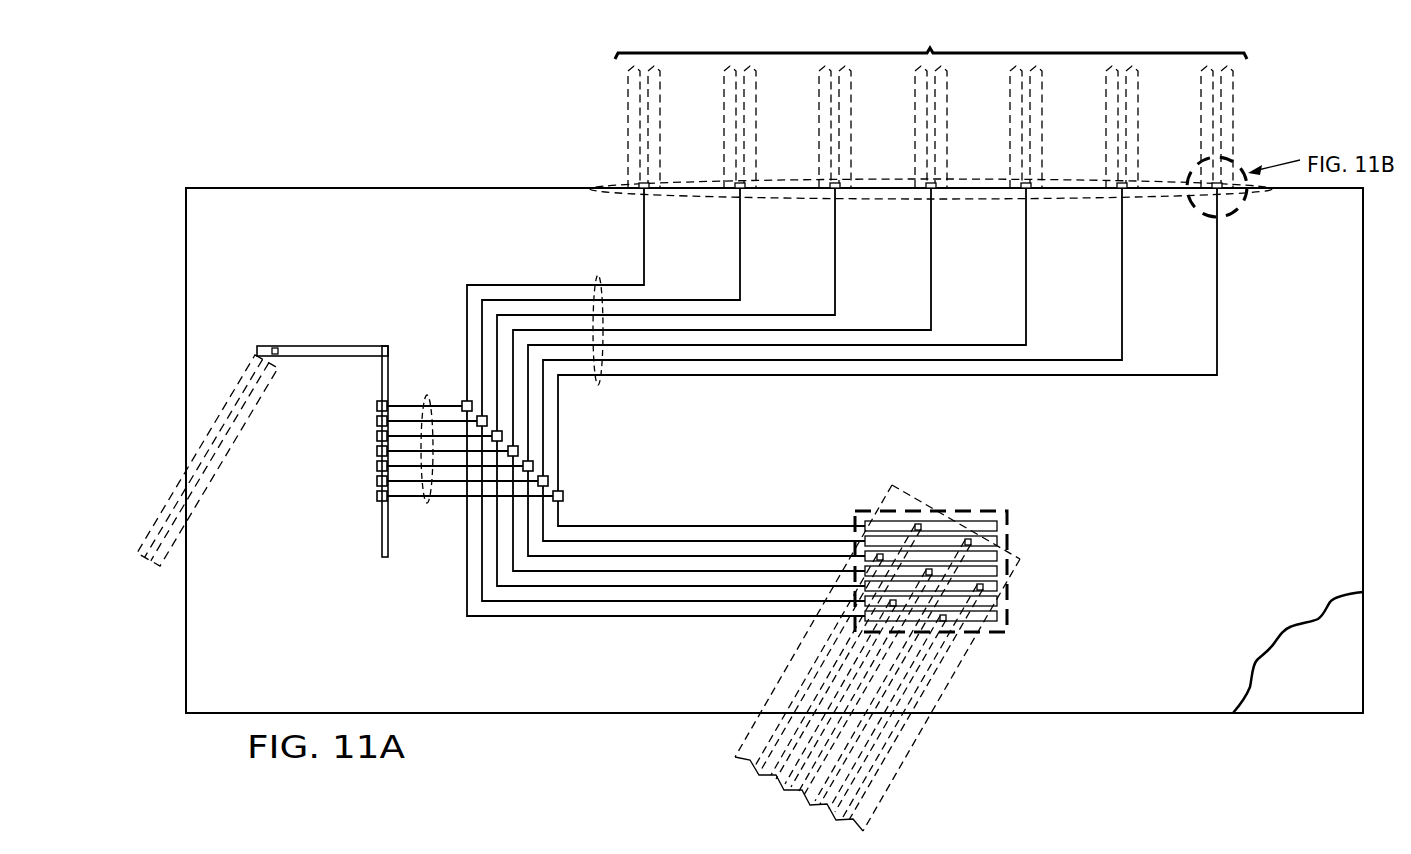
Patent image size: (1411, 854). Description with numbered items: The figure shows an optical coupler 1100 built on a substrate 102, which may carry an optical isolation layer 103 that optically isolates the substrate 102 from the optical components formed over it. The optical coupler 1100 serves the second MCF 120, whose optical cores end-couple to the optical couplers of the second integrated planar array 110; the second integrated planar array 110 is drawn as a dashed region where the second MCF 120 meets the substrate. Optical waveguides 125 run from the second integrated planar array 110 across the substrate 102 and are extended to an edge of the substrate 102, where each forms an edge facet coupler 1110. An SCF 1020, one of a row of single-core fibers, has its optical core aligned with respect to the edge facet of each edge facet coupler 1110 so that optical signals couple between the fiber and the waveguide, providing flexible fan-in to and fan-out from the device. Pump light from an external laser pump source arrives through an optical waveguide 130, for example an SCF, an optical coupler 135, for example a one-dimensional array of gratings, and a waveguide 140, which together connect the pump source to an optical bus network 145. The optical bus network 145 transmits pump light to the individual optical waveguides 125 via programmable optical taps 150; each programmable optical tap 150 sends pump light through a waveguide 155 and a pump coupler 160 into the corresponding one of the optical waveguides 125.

The optical coupler 1100 is at (464, 129).
The SCF 1020 is at (931, 103).
The edge facet coupler 1110 is at (892, 178).
The optical waveguides 125 is at (598, 280).
The waveguide 155 is at (428, 506).
The pump coupler 160 is at (462, 400).
The programmable optical tap 150 is at (377, 406).
The optical bus network 145 is at (381, 530).
The waveguide 140 is at (339, 339).
The optical coupler 135 is at (275, 346).
The optical waveguide 130 is at (217, 478).
The second integrated planar array 110 is at (982, 502).
The second MCF 120 is at (913, 745).
The optical isolation layer 103 is at (1173, 585).
The substrate 102 is at (1294, 678).